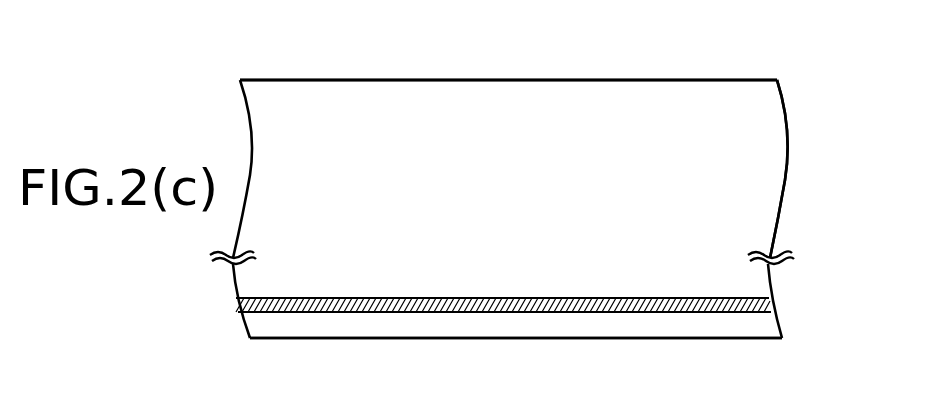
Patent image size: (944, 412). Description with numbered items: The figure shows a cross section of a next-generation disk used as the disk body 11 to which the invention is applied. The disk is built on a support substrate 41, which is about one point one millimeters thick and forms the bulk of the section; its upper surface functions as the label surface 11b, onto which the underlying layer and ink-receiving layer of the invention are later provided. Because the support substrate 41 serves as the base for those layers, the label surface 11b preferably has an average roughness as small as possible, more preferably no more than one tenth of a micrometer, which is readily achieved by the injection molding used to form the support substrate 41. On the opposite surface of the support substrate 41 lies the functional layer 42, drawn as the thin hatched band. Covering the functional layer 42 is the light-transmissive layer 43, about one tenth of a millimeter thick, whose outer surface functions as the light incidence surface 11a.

The disk body 11 is at (315, 49).
The light incidence surface 11a is at (472, 339).
The label surface 11b is at (660, 80).
The support substrate 41 is at (758, 192).
The functional layer 42 is at (768, 302).
The light-transmissive layer 43 is at (762, 328).